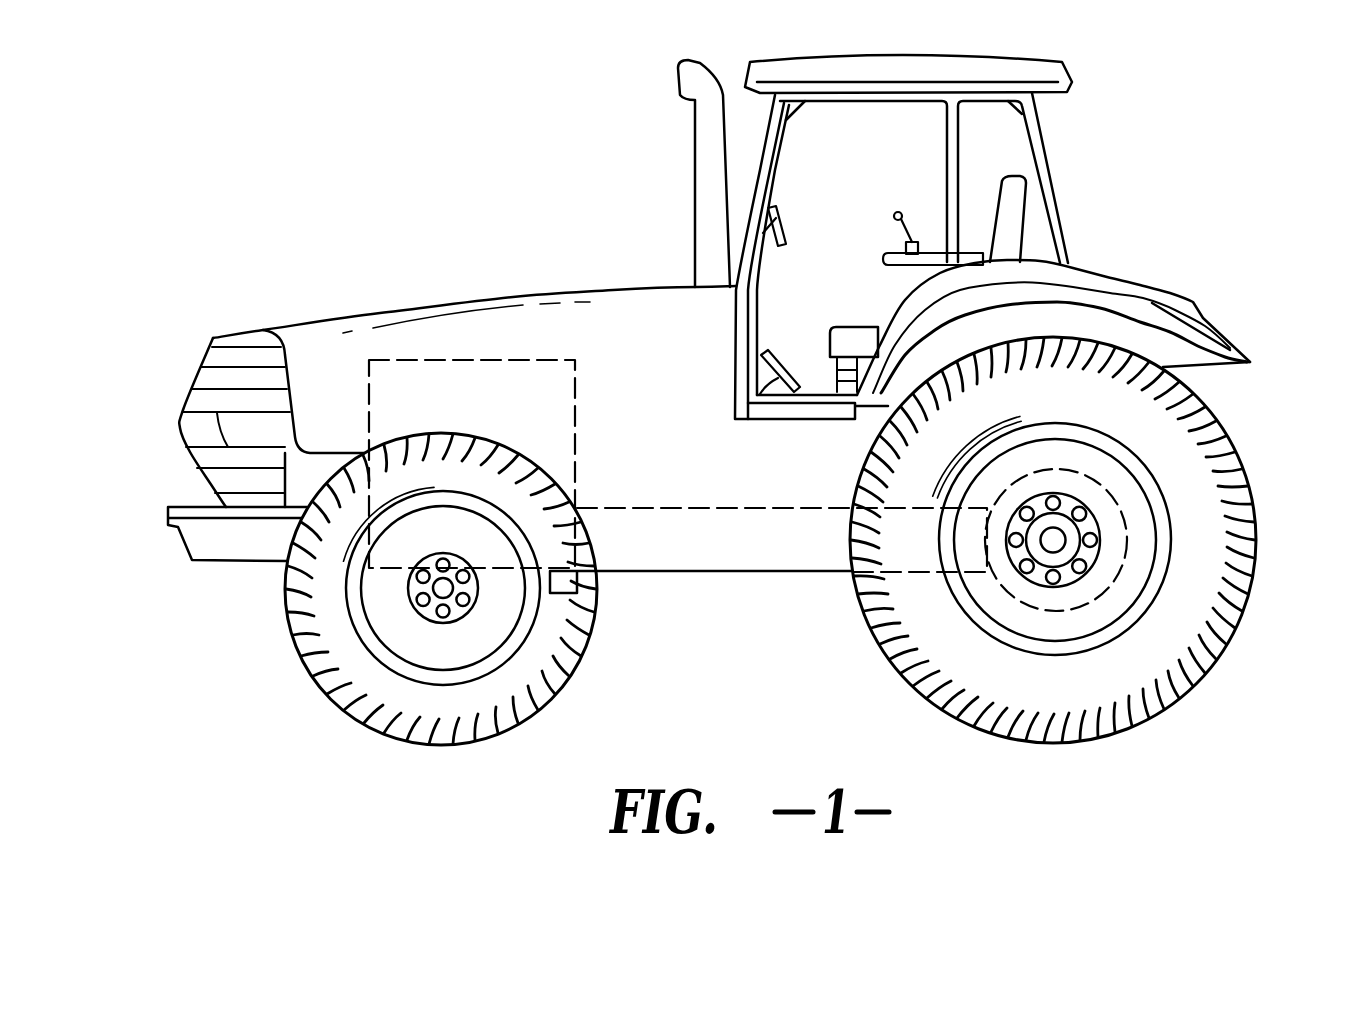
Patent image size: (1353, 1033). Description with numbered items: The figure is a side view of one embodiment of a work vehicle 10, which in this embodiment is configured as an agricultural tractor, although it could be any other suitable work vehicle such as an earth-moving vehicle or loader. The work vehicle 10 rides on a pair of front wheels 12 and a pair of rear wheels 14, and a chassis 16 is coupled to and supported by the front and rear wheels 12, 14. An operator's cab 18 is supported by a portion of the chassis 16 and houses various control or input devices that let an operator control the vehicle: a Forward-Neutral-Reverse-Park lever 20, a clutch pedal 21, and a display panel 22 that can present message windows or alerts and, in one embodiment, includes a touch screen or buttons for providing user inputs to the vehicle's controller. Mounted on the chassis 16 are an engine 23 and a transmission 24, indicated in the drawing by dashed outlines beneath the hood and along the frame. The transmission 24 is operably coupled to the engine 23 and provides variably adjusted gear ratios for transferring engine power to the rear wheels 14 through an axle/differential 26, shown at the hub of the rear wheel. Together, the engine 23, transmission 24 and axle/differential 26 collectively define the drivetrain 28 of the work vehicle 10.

The work vehicle 10 is at (372, 192).
The front wheels 12 is at (287, 608).
The rear wheels 14 is at (1260, 573).
The chassis 16 is at (670, 575).
The operator's cab 18 is at (1062, 185).
The Forward-Neutral-Reverse-Park (FNRP) lever 20 is at (894, 214).
The clutch pedal 21 is at (787, 376).
The display panel 22 is at (785, 215).
The engine 23 is at (443, 360).
The transmission 24 is at (735, 505).
The axle/differential 26 is at (1127, 541).
The drivetrain 28 is at (637, 320).